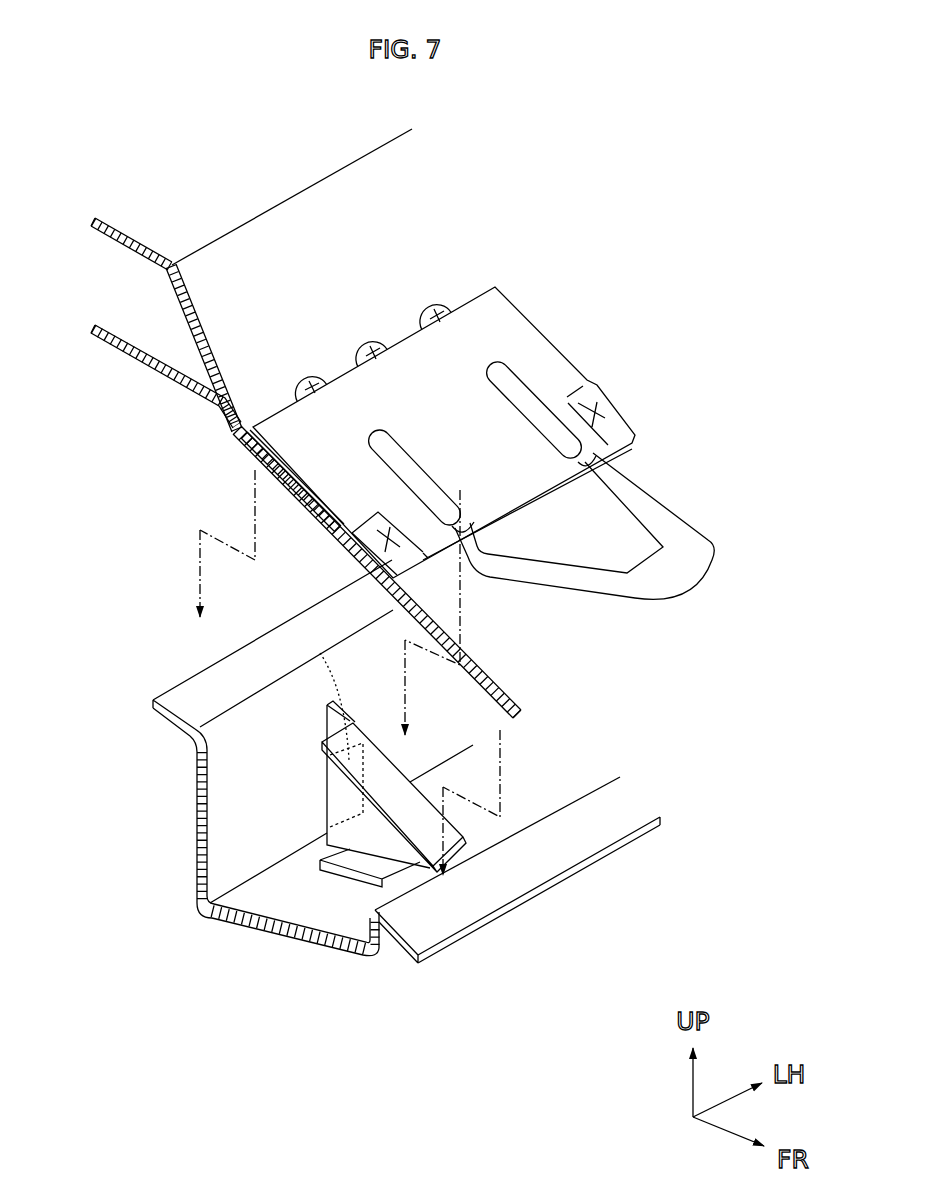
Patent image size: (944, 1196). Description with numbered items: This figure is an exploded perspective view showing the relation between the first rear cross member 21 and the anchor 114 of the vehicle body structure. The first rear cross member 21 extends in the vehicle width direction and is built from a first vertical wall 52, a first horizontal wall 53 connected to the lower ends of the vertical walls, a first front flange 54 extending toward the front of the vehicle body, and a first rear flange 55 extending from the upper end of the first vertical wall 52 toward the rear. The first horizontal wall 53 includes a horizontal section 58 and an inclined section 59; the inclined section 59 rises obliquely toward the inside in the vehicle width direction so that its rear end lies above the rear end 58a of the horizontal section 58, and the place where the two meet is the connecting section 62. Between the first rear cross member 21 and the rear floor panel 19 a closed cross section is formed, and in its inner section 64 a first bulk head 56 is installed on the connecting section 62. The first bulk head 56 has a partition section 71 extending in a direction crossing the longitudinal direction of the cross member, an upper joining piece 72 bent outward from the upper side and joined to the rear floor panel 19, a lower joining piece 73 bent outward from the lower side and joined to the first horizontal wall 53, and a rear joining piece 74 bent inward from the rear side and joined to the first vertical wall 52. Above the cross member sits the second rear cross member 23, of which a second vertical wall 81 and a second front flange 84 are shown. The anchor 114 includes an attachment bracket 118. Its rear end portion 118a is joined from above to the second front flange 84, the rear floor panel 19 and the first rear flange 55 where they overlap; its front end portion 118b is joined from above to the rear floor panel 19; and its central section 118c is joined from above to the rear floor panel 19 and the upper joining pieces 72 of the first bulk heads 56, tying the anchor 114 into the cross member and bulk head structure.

The rear floor panel 19 is at (507, 645).
The first rear cross member 21 is at (195, 782).
The second rear cross member 23 is at (210, 210).
The first vertical wall 52 is at (227, 820).
The first horizontal wall 53 is at (493, 828).
The first front flange 54 is at (595, 830).
The first rear flange 55 is at (262, 655).
The first bulk head 56 is at (327, 727).
The horizontal section 58 is at (323, 895).
The rear end 58a is at (218, 918).
The inclined section 59 is at (548, 765).
The connecting section 62 is at (457, 852).
The inner section 64 is at (246, 761).
The partition section 71 is at (357, 833).
The upper joining piece 72 is at (397, 783).
The lower joining piece 73 is at (375, 870).
The rear joining piece 74 is at (319, 693).
The second vertical wall 81 is at (254, 330).
The second front flange 84 is at (280, 458).
The anchor 114 is at (690, 528).
The attachment bracket 118 is at (510, 330).
The rear end portion 118a is at (410, 352).
The front end portion 118b is at (593, 393).
The central section 118c is at (467, 437).